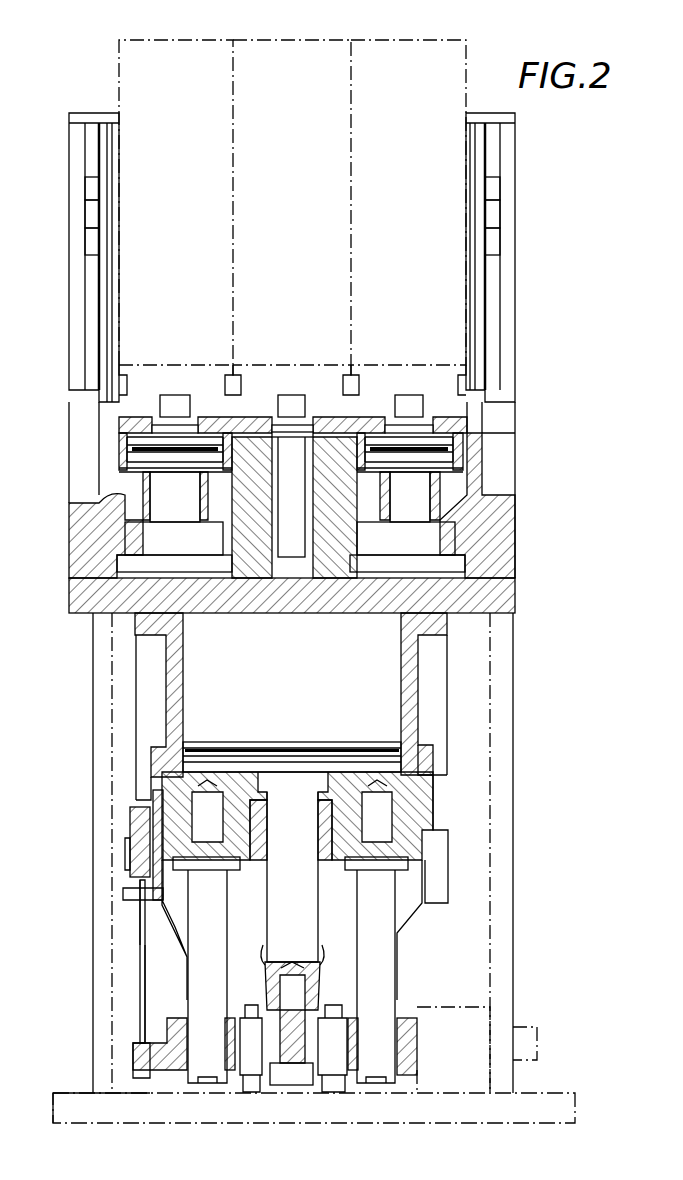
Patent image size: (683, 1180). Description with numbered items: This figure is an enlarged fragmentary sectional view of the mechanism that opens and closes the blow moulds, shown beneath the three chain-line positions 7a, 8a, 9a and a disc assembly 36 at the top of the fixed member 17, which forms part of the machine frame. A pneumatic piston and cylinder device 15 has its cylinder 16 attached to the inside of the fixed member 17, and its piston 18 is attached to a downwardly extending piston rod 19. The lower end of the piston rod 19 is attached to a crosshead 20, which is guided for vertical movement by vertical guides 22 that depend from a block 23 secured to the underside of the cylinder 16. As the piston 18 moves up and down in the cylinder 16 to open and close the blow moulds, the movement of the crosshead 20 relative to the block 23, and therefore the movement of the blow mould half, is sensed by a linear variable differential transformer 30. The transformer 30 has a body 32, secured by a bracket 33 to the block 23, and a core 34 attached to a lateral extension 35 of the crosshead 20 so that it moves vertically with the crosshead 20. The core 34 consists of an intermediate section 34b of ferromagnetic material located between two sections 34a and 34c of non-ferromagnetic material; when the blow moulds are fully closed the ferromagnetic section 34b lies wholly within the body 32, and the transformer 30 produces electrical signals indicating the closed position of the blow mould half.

The first tape cassette position 7a is at (170, 72).
The second tape cassette position 8a is at (288, 72).
The third tape cassette position 9a is at (406, 72).
The clutch disc assembly 36 is at (468, 447).
The fixed member 17 is at (500, 600).
The cylinder 16 is at (408, 663).
The pneumatic piston and cylinder device 15 is at (422, 708).
The piston 18 is at (277, 753).
The block 23 is at (425, 815).
The vertical guides 22 is at (200, 978).
The piston rod 19 is at (275, 923).
The crosshead 20 is at (412, 1015).
The body 32 is at (130, 816).
The bracket 33 is at (152, 798).
The linear variable differential transformer 30 is at (120, 880).
The core 34 is at (138, 953).
The non-ferromagnetic section 34a is at (140, 923).
The intermediate section 34b is at (140, 975).
The non-ferromagnetic section 34c is at (140, 1015).
The lateral extension 35 is at (158, 1066).